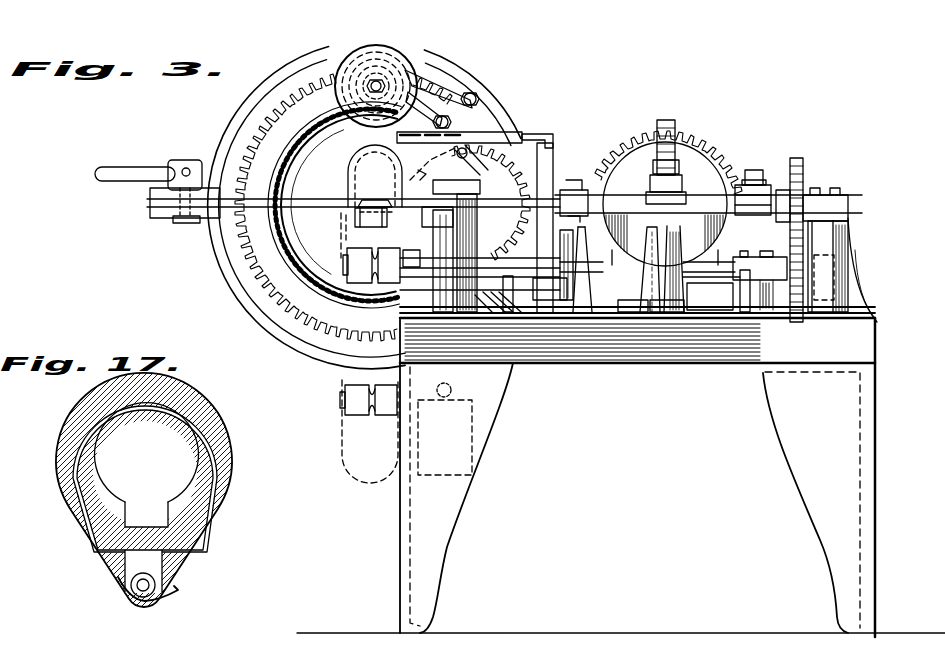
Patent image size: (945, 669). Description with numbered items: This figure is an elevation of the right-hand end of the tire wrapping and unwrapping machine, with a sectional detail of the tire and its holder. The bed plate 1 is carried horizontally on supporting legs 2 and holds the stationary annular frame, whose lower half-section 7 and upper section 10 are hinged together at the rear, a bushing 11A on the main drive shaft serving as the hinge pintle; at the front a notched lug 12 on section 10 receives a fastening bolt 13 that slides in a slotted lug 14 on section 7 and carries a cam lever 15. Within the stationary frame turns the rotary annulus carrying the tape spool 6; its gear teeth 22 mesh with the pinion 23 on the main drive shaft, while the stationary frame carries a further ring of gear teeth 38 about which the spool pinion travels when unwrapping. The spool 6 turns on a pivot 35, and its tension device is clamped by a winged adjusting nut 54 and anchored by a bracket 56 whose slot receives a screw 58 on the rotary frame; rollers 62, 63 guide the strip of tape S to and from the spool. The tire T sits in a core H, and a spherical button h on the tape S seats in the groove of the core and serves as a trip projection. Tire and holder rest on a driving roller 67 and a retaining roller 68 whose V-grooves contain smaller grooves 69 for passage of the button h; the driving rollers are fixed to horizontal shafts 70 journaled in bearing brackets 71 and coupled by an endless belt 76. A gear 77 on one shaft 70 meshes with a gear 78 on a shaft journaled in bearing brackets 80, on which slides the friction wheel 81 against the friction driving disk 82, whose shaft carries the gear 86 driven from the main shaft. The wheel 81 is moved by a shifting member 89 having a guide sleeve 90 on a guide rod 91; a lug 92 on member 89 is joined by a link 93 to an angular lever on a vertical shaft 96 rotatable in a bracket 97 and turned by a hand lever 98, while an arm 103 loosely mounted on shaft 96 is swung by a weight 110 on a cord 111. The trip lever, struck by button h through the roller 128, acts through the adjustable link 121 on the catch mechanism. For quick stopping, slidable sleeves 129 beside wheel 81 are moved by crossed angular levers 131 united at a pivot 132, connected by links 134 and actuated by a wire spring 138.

In FIG. 3, the bed plate 1 is at (875, 355).
In FIG. 3, the supporting legs 2 is at (635, 498).
In FIG. 3, the tape spool 6 is at (375, 44).
In FIG. 3, the lower half-section of stationary frame 7 is at (252, 308).
In FIG. 3, the upper section of stationary frame 10 is at (503, 128).
In FIG. 3, the bushing 11A is at (405, 302).
In FIG. 3, the lug 12 is at (160, 203).
In FIG. 3, the fastening bolt 13 is at (188, 224).
In FIG. 3, the lug 14 is at (166, 218).
In FIG. 3, the cam lever 15 is at (133, 176).
In FIG. 3, the gear teeth 22 is at (306, 90).
In FIG. 3, the pinion 23 is at (570, 178).
In FIG. 3, the pivot 35 is at (514, 307).
In FIG. 3, the gear teeth 38 is at (277, 240).
In FIG. 3, the winged adjusting nut 54 is at (412, 60).
In FIG. 3, the bracket 56 is at (455, 92).
In FIG. 3, the screw 58 is at (502, 140).
In FIG. 3, the roller 62 is at (470, 110).
In FIG. 3, the roller 63 is at (392, 140).
In FIG. 3, the supporting and driving roller 67 is at (346, 264).
In FIG. 3, the retaining roller 68 is at (350, 395).
In FIG. 3, the smaller grooves 69 is at (372, 410).
In FIG. 3, the horizontal shafts 70 is at (711, 293).
In FIG. 3, the bearing brackets 71 is at (738, 272).
In FIG. 3, the endless belt 76 is at (835, 300).
In FIG. 3, the gear 77 is at (803, 268).
In FIG. 3, the gear 78 is at (797, 160).
In FIG. 3, the bearing brackets 80 is at (830, 297).
In FIG. 3, the friction wheel 81 is at (668, 133).
In FIG. 3, the friction driving disk 82 is at (683, 168).
In FIG. 3, the gear 86 is at (682, 147).
In FIG. 3, the shifting member 89 is at (645, 247).
In FIG. 3, the guide sleeve 90 is at (618, 320).
In FIG. 3, the guide rod 91 is at (744, 318).
In FIG. 3, the lug 92 is at (650, 320).
In FIG. 3, the link 93 is at (626, 314).
In FIG. 3, the vertical pivot or shaft 96 is at (559, 170).
In FIG. 3, the bracket 97 is at (578, 318).
In FIG. 3, the hand lever 98 is at (502, 135).
In FIG. 3, the arm 103 is at (508, 290).
In FIG. 3, the weight 110 is at (422, 463).
In FIG. 3, the cord 111 is at (477, 272).
In FIG. 3, the link 121 is at (400, 220).
In FIG. 3, the roller 128 is at (380, 232).
In FIG. 3, the slidable sleeves 129 is at (818, 195).
In FIG. 3, the angular levers 131 is at (781, 204).
In FIG. 3, the pivot 132 is at (656, 130).
In FIG. 3, the links 134 is at (748, 197).
In FIG. 3, the spring 138 is at (700, 178).
In FIG. 3, the tire T is at (358, 156).
In FIG. 17, the tire T is at (200, 402).
In FIG. 3, the core H is at (352, 194).
In FIG. 17, the core H is at (197, 528).
In FIG. 3, the spherical button h is at (356, 214).
In FIG. 17, the spherical button h is at (165, 584).
In FIG. 3, the strip of tape S is at (432, 164).
In FIG. 17, the strip of tape S is at (172, 596).